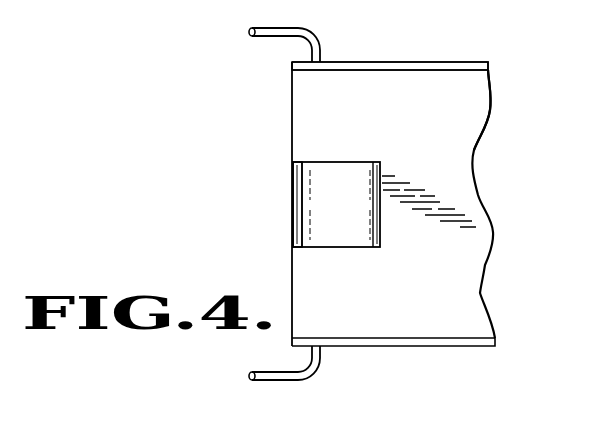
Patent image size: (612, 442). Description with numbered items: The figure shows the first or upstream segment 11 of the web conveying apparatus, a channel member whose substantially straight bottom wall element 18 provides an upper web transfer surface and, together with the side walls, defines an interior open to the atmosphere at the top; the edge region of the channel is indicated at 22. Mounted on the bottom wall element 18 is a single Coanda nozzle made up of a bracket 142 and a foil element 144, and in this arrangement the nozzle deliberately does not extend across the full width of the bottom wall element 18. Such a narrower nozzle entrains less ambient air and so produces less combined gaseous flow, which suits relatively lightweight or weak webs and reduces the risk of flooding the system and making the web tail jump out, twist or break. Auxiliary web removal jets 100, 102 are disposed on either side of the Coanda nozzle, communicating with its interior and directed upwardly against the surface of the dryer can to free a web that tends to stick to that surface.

The first segment 11 is at (465, 62).
The bottom wall element 18 is at (476, 139).
The plate 22 is at (390, 62).
The auxiliary web removal jet 100 is at (283, 383).
The auxiliary web removal jet 102 is at (291, 28).
The bracket 142 is at (292, 178).
The foil element 144 is at (352, 172).